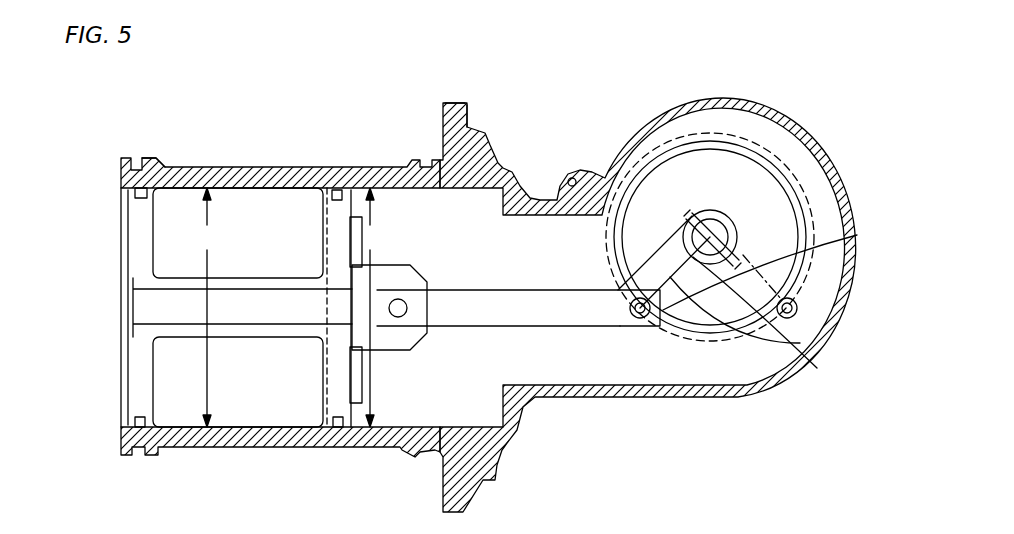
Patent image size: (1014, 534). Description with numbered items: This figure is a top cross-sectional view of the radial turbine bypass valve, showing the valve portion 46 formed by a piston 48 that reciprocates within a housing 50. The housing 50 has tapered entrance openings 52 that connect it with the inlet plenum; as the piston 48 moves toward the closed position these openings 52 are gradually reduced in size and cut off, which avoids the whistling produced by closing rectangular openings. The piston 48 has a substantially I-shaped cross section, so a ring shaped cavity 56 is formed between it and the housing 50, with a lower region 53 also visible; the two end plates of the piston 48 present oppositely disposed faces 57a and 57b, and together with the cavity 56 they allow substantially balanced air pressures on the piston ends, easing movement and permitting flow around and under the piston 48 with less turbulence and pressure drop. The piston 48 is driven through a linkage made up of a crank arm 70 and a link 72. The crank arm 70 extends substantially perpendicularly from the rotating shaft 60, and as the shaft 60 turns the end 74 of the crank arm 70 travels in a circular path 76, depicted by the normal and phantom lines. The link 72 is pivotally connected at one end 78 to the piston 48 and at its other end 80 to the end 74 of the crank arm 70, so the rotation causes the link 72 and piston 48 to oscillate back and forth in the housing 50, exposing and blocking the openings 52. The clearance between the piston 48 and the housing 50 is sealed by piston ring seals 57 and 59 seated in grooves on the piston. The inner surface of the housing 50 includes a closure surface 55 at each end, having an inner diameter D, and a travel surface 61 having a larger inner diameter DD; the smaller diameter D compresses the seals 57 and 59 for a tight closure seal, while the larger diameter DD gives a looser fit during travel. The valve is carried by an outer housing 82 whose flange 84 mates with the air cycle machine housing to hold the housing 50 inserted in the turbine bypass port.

The valve portion 46 is at (261, 452).
The piston 48 is at (147, 390).
The housing 50 is at (488, 158).
The entrance openings 52 is at (173, 347).
The lower seal chamber 53 is at (279, 427).
The closure surface 55 is at (127, 189).
The ring shaped cavity 56 is at (243, 200).
The piston ring seal 57 is at (153, 160).
The face 57a is at (125, 348).
The face 57b is at (353, 401).
The piston ring seal 59 is at (325, 190).
The rotating shaft 60 is at (722, 212).
The travel surface 61 is at (408, 219).
The crank arm 70 is at (857, 235).
The link 72 is at (549, 320).
The end of crank arm 74 is at (632, 305).
The circular path 76 is at (826, 197).
The end of link 78 is at (388, 320).
The other end of link 80 is at (614, 320).
The outer housing 82 is at (462, 104).
The flange 84 is at (447, 103).
The inner diameter of closure surface D is at (138, 168).
The inner diameter of travel surface DD is at (291, 307).